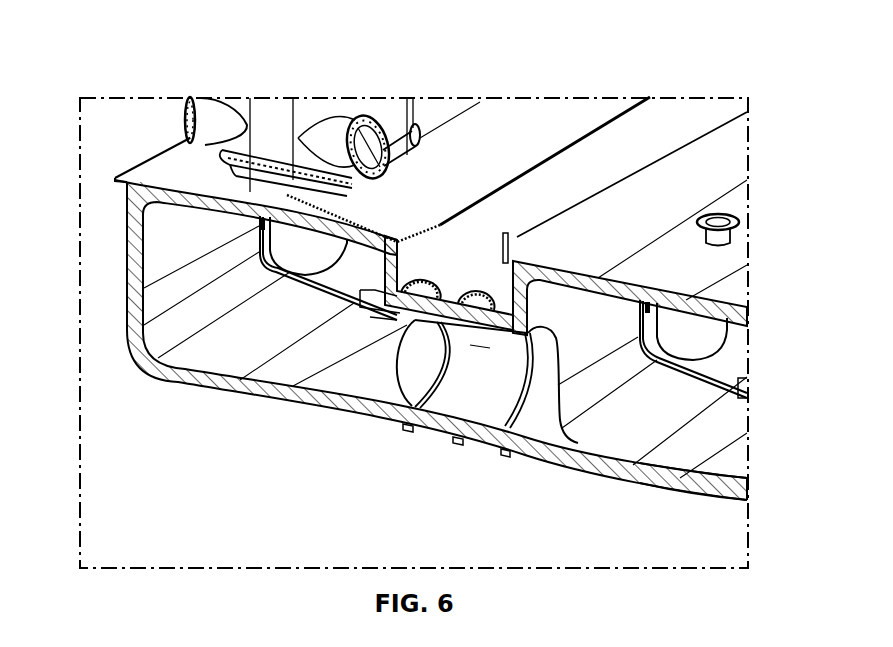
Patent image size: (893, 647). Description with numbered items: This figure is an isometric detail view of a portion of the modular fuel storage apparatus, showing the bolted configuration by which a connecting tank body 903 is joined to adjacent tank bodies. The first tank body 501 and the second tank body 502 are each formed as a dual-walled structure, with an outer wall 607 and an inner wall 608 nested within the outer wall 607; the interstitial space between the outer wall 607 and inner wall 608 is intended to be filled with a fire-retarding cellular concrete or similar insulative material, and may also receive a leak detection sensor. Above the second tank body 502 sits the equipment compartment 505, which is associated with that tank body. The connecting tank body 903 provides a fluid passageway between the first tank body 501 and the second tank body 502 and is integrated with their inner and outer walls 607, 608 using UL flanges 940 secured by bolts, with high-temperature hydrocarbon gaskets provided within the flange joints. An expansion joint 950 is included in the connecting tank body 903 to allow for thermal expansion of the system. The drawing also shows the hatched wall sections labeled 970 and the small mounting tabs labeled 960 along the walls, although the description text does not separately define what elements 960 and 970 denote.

The first tank body 501 is at (101, 312).
The second tank body 502 is at (640, 480).
The equipment compartment 505 is at (279, 117).
The outer wall 607 is at (131, 179).
The inner wall 608 is at (388, 240).
The connecting tank body 903 is at (486, 384).
The UL flanges 940 is at (411, 293).
The expansion joint 950 is at (432, 414).
The mounting tabs 960 is at (401, 428).
The wall insulation layer 970 is at (135, 193).